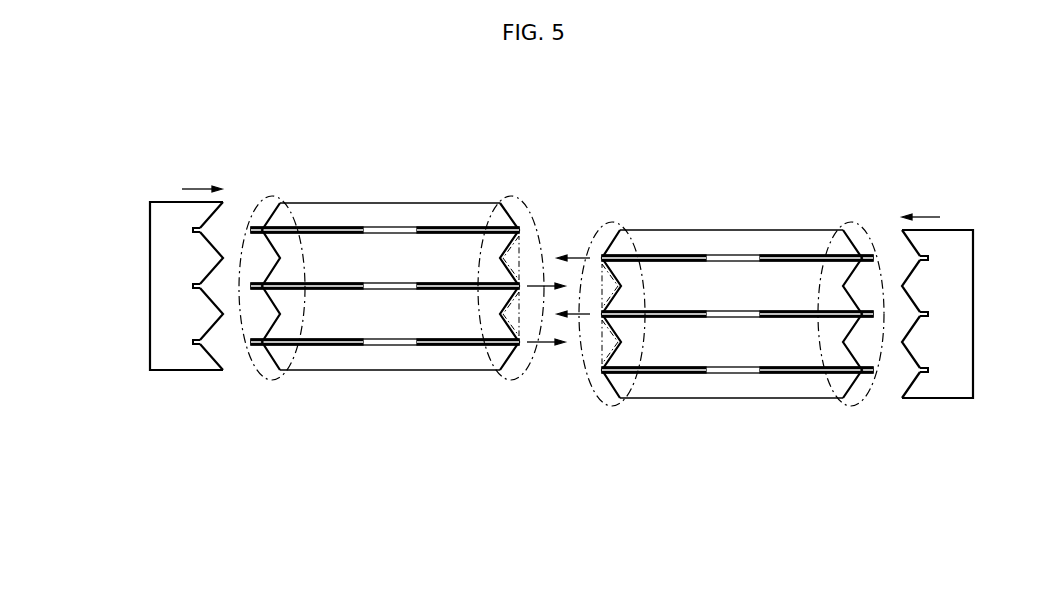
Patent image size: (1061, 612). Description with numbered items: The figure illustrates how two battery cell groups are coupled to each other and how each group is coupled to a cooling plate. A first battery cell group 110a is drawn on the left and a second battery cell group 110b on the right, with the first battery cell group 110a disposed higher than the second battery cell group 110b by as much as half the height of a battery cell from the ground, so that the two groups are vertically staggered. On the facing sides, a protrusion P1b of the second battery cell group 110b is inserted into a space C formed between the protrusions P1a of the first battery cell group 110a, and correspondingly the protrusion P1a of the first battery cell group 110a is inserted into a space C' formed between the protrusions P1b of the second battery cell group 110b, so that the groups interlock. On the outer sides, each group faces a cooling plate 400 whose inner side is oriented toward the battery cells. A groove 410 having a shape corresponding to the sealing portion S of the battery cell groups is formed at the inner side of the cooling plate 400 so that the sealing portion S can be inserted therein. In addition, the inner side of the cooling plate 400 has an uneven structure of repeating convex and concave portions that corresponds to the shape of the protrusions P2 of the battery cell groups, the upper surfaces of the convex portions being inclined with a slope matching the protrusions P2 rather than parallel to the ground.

The battery cell group 110a is at (378, 182).
The battery cell group 110b is at (718, 210).
The cooling plate 400 is at (150, 312).
The groove 410 is at (194, 229).
The sealing portion S is at (258, 218).
The space C is at (518, 253).
The space C' is at (602, 350).
The protrusion P1a is at (518, 377).
The protrusion P1b is at (632, 400).
The protrusion P2 is at (262, 379).